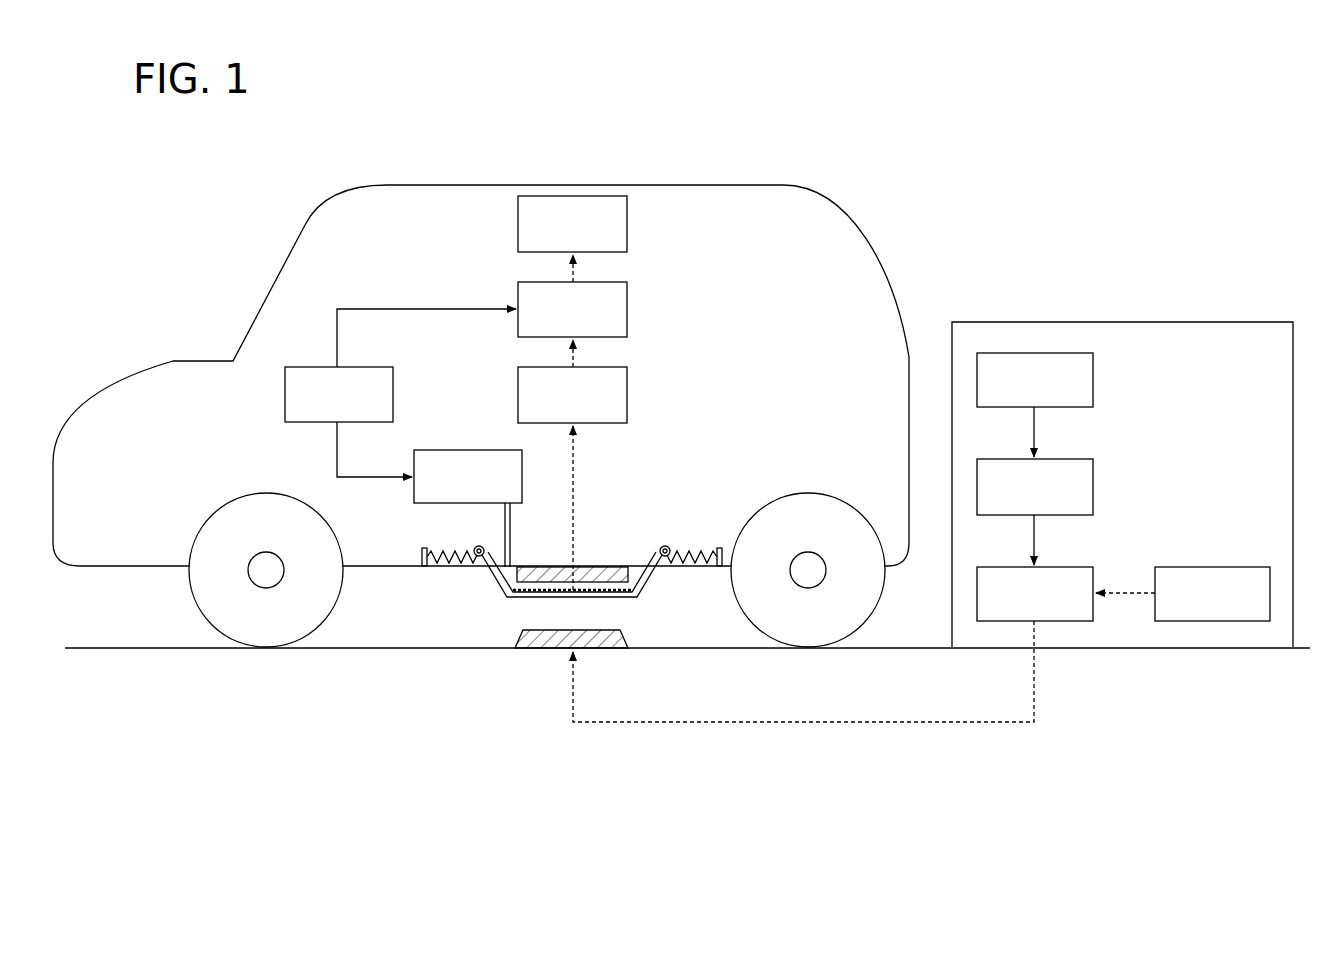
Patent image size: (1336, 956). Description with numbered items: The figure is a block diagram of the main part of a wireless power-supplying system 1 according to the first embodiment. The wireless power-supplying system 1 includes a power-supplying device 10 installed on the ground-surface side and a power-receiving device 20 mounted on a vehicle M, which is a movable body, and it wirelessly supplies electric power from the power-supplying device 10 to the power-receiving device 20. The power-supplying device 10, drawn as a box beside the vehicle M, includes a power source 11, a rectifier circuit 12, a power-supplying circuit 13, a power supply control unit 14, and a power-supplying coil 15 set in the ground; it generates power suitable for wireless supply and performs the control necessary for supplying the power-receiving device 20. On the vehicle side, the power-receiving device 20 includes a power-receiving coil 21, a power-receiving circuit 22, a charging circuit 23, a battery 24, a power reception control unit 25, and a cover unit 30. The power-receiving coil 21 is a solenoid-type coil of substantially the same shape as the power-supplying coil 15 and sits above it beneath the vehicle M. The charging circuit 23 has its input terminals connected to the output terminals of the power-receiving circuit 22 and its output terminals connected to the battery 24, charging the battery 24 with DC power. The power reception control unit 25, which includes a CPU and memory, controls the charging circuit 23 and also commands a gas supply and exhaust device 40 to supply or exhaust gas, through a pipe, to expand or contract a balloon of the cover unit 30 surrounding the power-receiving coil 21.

The wireless power-supplying system 1 is at (1262, 183).
The power-supplying device 10 is at (1140, 321).
The power source 11 is at (1094, 388).
The rectifier circuit 12 is at (1094, 498).
The power-supplying circuit 13 is at (1094, 575).
The power supply control unit 14 is at (1213, 566).
The power-supplying coil 15 is at (623, 643).
The power-receiving device 20 is at (477, 230).
The power-receiving coil 21 is at (520, 572).
The power-receiving circuit 22 is at (628, 394).
The charging circuit 23 is at (628, 309).
The battery 24 is at (628, 224).
The power reception control unit 25 is at (305, 366).
The cover unit 30 is at (425, 582).
The gas supply and exhaust device 40 is at (440, 449).
The vehicle M is at (742, 185).